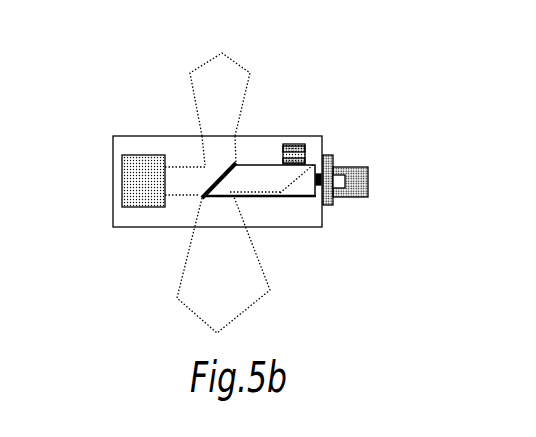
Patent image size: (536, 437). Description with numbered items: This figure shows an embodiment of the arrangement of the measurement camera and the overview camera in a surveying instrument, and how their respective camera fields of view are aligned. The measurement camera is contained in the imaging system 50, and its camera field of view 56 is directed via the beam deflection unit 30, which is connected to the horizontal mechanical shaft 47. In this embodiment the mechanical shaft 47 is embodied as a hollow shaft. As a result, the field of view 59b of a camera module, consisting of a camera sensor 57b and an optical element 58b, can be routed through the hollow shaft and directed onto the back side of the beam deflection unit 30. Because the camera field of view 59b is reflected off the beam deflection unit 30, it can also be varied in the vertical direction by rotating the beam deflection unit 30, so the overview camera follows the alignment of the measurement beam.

The imaging system 50 is at (137, 153).
The camera field of view 56 is at (190, 96).
The beam deflection unit 30 is at (174, 220).
The mechanical shaft 47 is at (288, 225).
The camera sensor 57b is at (326, 123).
The optical element 58b is at (340, 161).
The camera field of view 59b is at (177, 297).